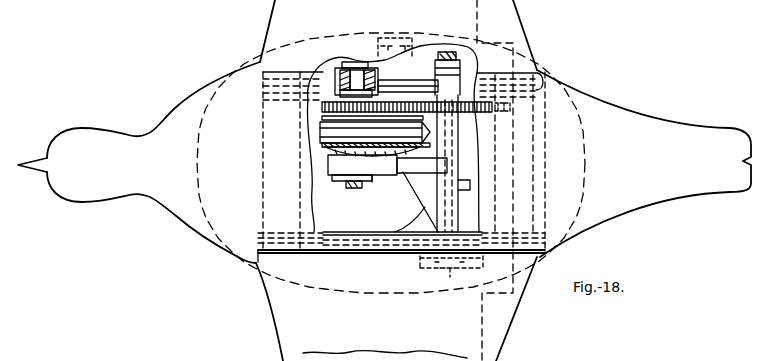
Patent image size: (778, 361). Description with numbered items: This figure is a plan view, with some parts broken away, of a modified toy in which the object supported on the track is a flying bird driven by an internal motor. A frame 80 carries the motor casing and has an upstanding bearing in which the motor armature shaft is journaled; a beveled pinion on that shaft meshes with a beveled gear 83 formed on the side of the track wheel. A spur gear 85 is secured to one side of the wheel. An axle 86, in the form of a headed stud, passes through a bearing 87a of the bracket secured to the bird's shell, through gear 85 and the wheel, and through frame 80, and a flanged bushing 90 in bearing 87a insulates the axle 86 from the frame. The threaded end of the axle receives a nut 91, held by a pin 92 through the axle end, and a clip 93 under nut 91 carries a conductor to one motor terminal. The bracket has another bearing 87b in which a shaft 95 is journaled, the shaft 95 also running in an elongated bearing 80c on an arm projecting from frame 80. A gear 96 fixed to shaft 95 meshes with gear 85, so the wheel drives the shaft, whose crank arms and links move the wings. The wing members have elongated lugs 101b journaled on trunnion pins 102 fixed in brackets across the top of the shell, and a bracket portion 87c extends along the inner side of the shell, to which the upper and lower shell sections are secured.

The frame 80 is at (398, 191).
The elongated bearing 80c is at (463, 186).
The beveled gear 83 is at (332, 157).
The spur gear 85 is at (305, 95).
The axle 86 is at (356, 63).
The bearing 87a is at (318, 66).
The bearing 87b is at (460, 80).
The bracket portion 87c is at (542, 257).
The flanged bushing 90 is at (337, 62).
The nut 91 is at (343, 183).
The pin 92 is at (357, 196).
The clip 93 is at (372, 182).
The shaft 95 is at (448, 147).
The gear 96 is at (480, 121).
The elongated lugs 101b is at (298, 257).
The trunnion pins 102 is at (258, 242).